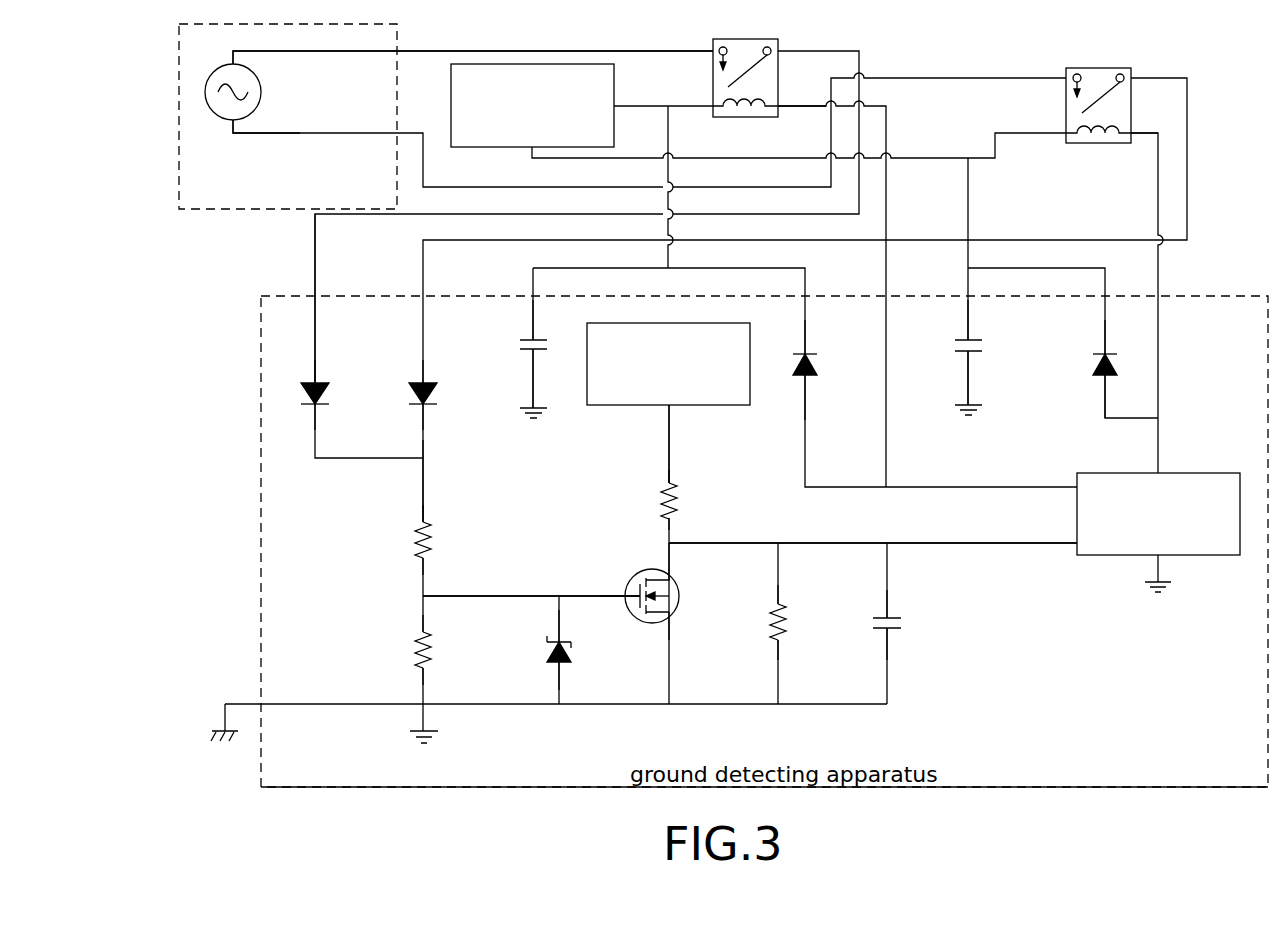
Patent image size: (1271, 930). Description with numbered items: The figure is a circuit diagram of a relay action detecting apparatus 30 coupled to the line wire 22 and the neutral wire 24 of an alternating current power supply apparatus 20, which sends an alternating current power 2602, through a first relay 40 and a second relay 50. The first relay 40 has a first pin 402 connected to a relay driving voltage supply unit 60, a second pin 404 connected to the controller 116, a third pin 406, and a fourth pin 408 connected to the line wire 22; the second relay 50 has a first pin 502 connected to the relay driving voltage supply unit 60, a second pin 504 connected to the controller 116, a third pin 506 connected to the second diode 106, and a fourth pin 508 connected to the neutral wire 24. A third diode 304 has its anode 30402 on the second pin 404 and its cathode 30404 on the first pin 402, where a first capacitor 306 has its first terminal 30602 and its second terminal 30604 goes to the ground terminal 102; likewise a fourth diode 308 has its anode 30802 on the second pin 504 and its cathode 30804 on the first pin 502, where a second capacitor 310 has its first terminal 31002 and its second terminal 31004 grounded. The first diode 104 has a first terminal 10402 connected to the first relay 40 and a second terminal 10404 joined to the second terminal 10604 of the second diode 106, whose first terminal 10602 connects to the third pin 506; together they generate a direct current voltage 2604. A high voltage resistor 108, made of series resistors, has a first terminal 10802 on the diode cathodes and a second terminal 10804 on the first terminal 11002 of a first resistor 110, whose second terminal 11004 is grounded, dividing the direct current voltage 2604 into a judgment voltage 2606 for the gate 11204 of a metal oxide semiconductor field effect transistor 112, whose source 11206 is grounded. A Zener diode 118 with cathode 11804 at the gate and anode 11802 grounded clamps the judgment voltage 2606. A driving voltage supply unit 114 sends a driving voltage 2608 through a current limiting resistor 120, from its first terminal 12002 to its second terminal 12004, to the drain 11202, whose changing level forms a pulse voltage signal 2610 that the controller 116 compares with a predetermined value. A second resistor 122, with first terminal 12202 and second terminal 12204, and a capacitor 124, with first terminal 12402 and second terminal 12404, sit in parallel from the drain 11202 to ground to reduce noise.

The alternating current power supply apparatus 20 is at (182, 105).
The line wire 22 is at (237, 51).
The neutral wire 24 is at (237, 133).
The alternating current power 2602 is at (478, 51).
The direct current voltage 2604 is at (424, 486).
The judgment voltage 2606 is at (489, 596).
The driving voltage 2608 is at (668, 414).
The pulse voltage signal 2610 is at (723, 543).
The relay action detecting apparatus 30 is at (940, 788).
The first relay 40 is at (747, 83).
The first pin 402 is at (713, 106).
The second pin 404 is at (788, 117).
The third pin 406 is at (780, 50).
The fourth pin 408 is at (713, 48).
The second relay 50 is at (1100, 110).
The first pin 502 is at (1066, 132).
The second pin 504 is at (1141, 143).
The third pin 506 is at (1135, 77).
The fourth pin 508 is at (1066, 77).
The relay driving voltage supply unit 60 is at (517, 147).
The ground terminal 102 is at (1153, 592).
The first diode 104 is at (359, 397).
The first terminal 10402 is at (316, 376).
The second terminal 10404 is at (316, 410).
The second diode 106 is at (467, 397).
The first terminal 10602 is at (425, 376).
The second terminal 10604 is at (425, 410).
The high voltage resistor 108 is at (372, 543).
The first terminal 10802 is at (424, 521).
The second terminal 10804 is at (424, 560).
The first resistor 110 is at (372, 651).
The first terminal 11002 is at (424, 631).
The second terminal 11004 is at (424, 670).
The metal oxide semiconductor field effect transistor 112 is at (637, 608).
The drain 11202 is at (671, 576).
The gate 11204 is at (636, 596).
The source 11206 is at (671, 620).
The driving voltage supply unit 114 is at (685, 398).
The controller 116 is at (1171, 478).
The Zener diode 118 is at (515, 653).
The anode 11802 is at (559, 672).
The cathode 11804 is at (559, 631).
The current limiting resistor 120 is at (612, 511).
The first terminal 12002 is at (669, 484).
The second terminal 12004 is at (669, 520).
The second resistor 122 is at (826, 622).
The first terminal 12202 is at (779, 602).
The second terminal 12204 is at (779, 643).
The capacitor 124 is at (933, 628).
The first terminal 12402 is at (888, 602).
The second terminal 12404 is at (888, 643).
The third diode 304 is at (838, 373).
The anode 30402 is at (810, 362).
The cathode 30404 is at (806, 353).
The first capacitor 306 is at (519, 363).
The first terminal 30602 is at (520, 338).
The second terminal 30604 is at (564, 389).
The fourth diode 308 is at (1060, 368).
The anode 30802 is at (1105, 382).
The cathode 30804 is at (1105, 351).
The second capacitor 310 is at (936, 360).
The first terminal 31002 is at (958, 341).
The second terminal 31004 is at (955, 345).